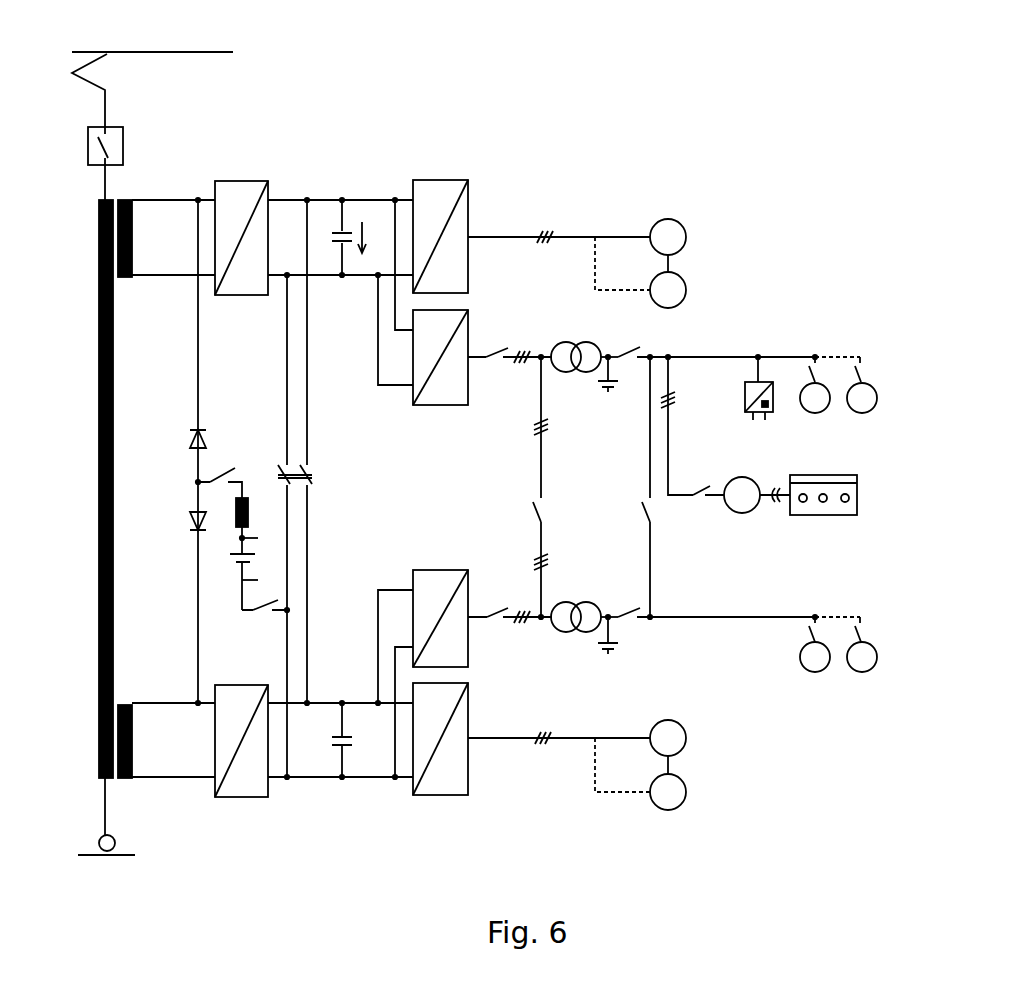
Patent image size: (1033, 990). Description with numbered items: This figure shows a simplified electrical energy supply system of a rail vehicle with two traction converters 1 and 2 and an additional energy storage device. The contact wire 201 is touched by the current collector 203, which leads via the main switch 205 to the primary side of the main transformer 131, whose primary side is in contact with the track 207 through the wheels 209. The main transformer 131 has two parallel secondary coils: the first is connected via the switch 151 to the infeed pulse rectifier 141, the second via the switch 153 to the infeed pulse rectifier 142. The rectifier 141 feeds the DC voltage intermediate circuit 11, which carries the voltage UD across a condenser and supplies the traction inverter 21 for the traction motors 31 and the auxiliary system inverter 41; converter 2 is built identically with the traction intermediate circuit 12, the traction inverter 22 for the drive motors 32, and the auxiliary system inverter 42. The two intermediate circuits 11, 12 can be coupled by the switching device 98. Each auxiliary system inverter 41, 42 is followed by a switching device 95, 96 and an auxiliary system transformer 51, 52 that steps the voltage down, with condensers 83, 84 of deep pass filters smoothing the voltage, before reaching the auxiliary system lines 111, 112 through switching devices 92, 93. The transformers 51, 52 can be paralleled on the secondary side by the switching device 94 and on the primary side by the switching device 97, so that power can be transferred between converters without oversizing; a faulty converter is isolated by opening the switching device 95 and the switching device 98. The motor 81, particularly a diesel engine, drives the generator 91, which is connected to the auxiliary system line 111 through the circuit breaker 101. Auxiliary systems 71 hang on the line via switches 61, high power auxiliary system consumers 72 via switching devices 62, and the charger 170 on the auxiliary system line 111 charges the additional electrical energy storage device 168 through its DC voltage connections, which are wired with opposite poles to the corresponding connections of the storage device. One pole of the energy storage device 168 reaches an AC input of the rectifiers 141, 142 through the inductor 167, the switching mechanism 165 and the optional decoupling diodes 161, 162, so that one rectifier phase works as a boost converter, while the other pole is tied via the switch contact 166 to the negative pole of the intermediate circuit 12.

The contact wire 201 is at (160, 47).
The current collector 203 is at (123, 76).
The main switch 205 is at (123, 145).
The main transformer 131 is at (87, 489).
The switch 151 is at (172, 188).
The switch 153 is at (172, 690).
The infeed pulse rectifier 141 is at (241, 227).
The infeed pulse rectifier 142 is at (241, 730).
The traction converter 1 is at (321, 148).
The traction converter 2 is at (313, 833).
The DC voltage intermediate circuit 11 is at (340, 226).
The traction intermediate circuit 12 is at (340, 729).
The traction inverter 21 is at (440, 225).
The traction inverter 22 is at (440, 750).
The auxiliary system inverter 41 is at (440, 369).
The auxiliary system inverter 42 is at (440, 607).
The traction motor 31 is at (577, 251).
The drive motor 32 is at (577, 778).
The switching device 95 is at (510, 346).
The switch 96 is at (510, 606).
The auxiliary system transformer 51 is at (584, 347).
The auxiliary system transformer 52 is at (584, 607).
The condenser 83 is at (599, 381).
The condenser 84 is at (599, 643).
The switch 92 is at (634, 340).
The switch 93 is at (634, 600).
The auxiliary system line 111 is at (754, 346).
The auxiliary busbar 112 is at (754, 606).
The switching device 97 is at (525, 487).
The switching device 94 is at (632, 487).
The switching device 98 is at (311, 477).
The circuit breaker 101 is at (692, 426).
The generator 91 is at (742, 508).
The motor 81 is at (808, 507).
The charger 170 is at (743, 396).
The switch 61 is at (849, 385).
The auxiliary system 71 is at (873, 385).
The switching device 62 is at (849, 644).
The auxiliary system consumer 72 is at (873, 644).
The decoupling diode 161 is at (178, 439).
The decoupling diode 162 is at (178, 522).
The switching mechanism 165 is at (219, 473).
The switch contact 166 is at (265, 617).
The inductor 167 is at (259, 526).
The additional electrical energy storage device 168 is at (240, 582).
The wheel 209 is at (117, 842).
The track 207 is at (128, 855).